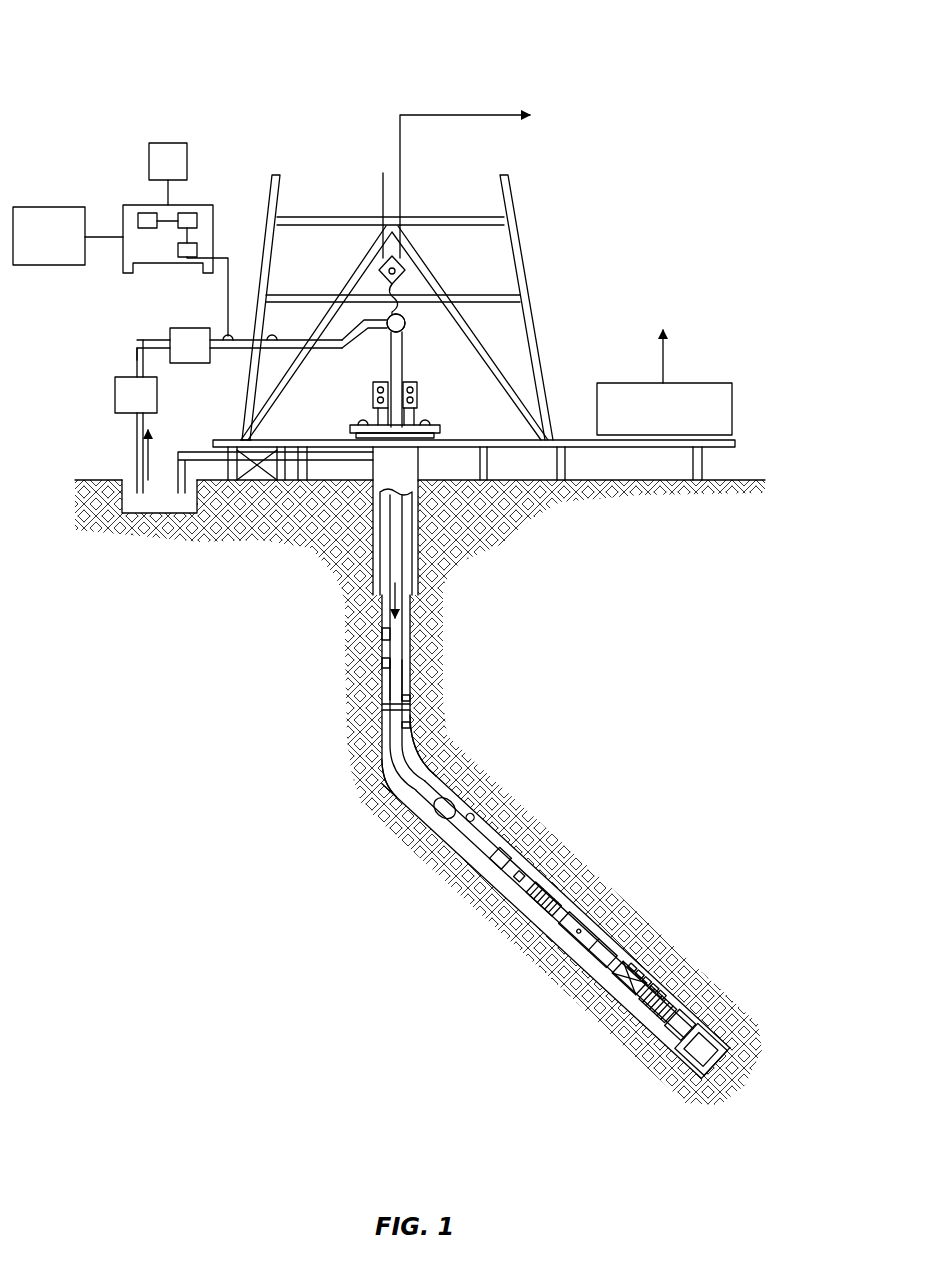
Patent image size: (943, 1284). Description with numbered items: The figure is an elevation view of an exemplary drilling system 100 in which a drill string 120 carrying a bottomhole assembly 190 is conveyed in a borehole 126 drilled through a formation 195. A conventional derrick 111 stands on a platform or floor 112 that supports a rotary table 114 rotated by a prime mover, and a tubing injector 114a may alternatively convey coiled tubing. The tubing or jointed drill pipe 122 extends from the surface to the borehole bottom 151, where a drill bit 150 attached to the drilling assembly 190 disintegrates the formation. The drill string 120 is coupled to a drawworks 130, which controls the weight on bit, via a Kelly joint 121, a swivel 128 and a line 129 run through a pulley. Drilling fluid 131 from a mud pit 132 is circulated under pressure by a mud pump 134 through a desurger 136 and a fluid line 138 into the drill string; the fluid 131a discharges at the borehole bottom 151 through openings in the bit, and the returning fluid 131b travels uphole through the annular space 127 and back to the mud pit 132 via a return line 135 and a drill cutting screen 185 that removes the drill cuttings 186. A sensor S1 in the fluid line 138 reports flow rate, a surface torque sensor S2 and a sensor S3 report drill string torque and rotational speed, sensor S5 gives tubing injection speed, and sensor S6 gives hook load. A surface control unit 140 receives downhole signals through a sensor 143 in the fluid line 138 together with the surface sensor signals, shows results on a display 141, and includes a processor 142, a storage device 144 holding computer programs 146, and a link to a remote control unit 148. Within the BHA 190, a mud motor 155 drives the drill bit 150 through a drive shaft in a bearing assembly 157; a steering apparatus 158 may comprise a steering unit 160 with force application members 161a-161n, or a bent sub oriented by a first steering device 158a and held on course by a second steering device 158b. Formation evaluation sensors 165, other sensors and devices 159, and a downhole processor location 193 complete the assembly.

The drilling system 100 is at (156, 55).
The derrick 111 is at (533, 310).
The platform or floor 112 is at (548, 436).
The rotary table 114 is at (433, 434).
The tubing injector 114a is at (418, 392).
The drill string 120 is at (405, 680).
The Kelly joint 121 is at (403, 372).
The tubing (jointed drill pipe) 122 is at (383, 653).
The borehole 126 is at (412, 752).
The annular space 127 is at (436, 780).
The swivel 128 is at (378, 340).
The line 129 is at (402, 183).
The drawworks 130 is at (693, 383).
The drilling fluid 131 is at (127, 487).
The drilling fluid from the drilling tubular 131a is at (378, 600).
The returning drilling fluid 131b is at (380, 764).
The source (mud pit) 132 is at (167, 507).
The mud pump 134 is at (115, 395).
The return line 135 is at (343, 462).
The desurger 136 is at (170, 330).
The fluid line 138 is at (242, 350).
The surface control unit 140 is at (152, 204).
The display/monitor 141 is at (168, 143).
The processor 142 is at (145, 213).
The sensor 143 is at (226, 336).
The storage device 144 is at (190, 213).
The computer programs 146 is at (185, 258).
The remote control unit 148 is at (66, 251).
The drill bit 150 is at (722, 1045).
The borehole bottom 151 is at (722, 1082).
The downhole motor (mud motor) 155 is at (505, 850).
The bearing assembly 157 is at (692, 999).
The steering apparatus 158 is at (682, 1022).
The first steering device 158a is at (690, 1052).
The second steering device 158b is at (670, 1036).
The sensors and devices 159 is at (698, 1080).
The steering unit 160 is at (650, 1016).
The force application members 161a-161n is at (684, 994).
The formation evaluation sensors 165 is at (590, 965).
The drill cutting screen 185 is at (240, 434).
The drill cuttings 186 is at (408, 632).
The bottomhole assembly 190 is at (604, 824).
The downhole processor location 193 is at (545, 912).
The formation 195 is at (738, 895).
The flow rate sensor S1 is at (272, 335).
The surface torque sensor S2 is at (428, 424).
The rotational speed sensor S3 is at (362, 423).
The tubing injection speed sensor S5 is at (405, 322).
The hook load sensor S6 is at (388, 315).